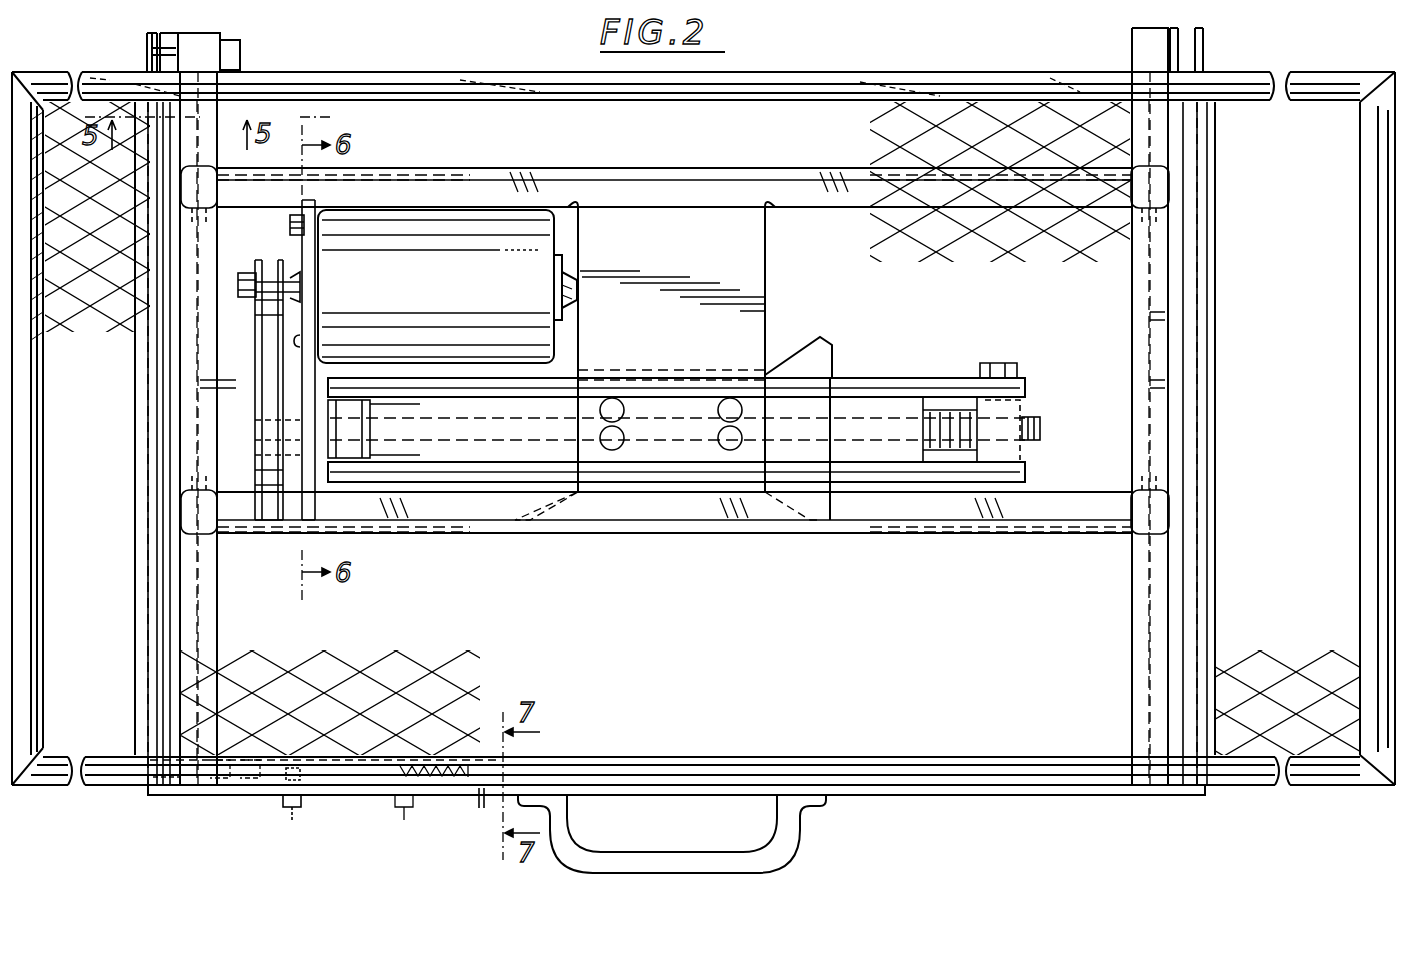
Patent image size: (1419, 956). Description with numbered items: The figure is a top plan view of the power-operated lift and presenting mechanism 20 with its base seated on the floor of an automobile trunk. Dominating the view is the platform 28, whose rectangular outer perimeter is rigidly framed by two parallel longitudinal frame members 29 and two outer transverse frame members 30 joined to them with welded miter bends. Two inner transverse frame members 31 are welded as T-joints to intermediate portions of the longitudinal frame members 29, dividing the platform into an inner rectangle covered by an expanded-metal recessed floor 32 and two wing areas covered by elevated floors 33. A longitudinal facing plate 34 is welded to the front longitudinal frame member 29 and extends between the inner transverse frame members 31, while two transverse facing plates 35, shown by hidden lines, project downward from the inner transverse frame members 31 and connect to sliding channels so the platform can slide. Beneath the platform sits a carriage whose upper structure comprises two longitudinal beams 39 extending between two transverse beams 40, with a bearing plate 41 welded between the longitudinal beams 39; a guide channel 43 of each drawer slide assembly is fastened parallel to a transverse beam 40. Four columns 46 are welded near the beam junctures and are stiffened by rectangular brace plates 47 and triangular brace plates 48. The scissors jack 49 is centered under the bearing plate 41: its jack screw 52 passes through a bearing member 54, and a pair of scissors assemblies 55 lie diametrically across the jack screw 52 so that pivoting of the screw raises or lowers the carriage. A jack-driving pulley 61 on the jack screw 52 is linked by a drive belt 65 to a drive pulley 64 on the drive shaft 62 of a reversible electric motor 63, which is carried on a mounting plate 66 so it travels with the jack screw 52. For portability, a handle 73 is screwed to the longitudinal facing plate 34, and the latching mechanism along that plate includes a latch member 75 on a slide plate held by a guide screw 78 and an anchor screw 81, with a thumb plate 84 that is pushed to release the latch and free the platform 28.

The power-operated lift and presenting mechanism 20 is at (964, 51).
The platform 28 is at (41, 801).
The longitudinal frame members 29 is at (508, 84).
The outer transverse frame members 30 is at (47, 418).
The inner transverse frame members 31 is at (142, 588).
The recessed floor 32 is at (912, 146).
The elevated floors 33 is at (115, 366).
The longitudinal facing plate 34 is at (1115, 796).
The transverse facing plates 35 is at (147, 62).
The longitudinal beams 39 is at (490, 185).
The transverse beams 40 is at (205, 55).
The bearing plate 41 is at (690, 346).
The guide channel 43 is at (160, 40).
The columns 46 is at (212, 190).
The rectangular brace plates 47 is at (1150, 316).
The triangular brace plates 48 is at (462, 170).
The scissors jack 49 is at (934, 370).
The jack screw 52 is at (1036, 422).
The bearing member 54 is at (380, 420).
The scissors assemblies 55 is at (884, 372).
The jack-driving pulley 61 is at (252, 410).
The drive shaft 62 is at (290, 287).
The reversible electric motor 63 is at (447, 286).
The drive pulley 64 is at (245, 276).
The drive belt 65 is at (270, 335).
The mounting plate 66 is at (315, 340).
The handle 73 is at (783, 828).
The latch member 75 is at (248, 788).
The guide screw 78 is at (299, 808).
The anchor screw 81 is at (425, 806).
The thumb plate 84 is at (478, 800).